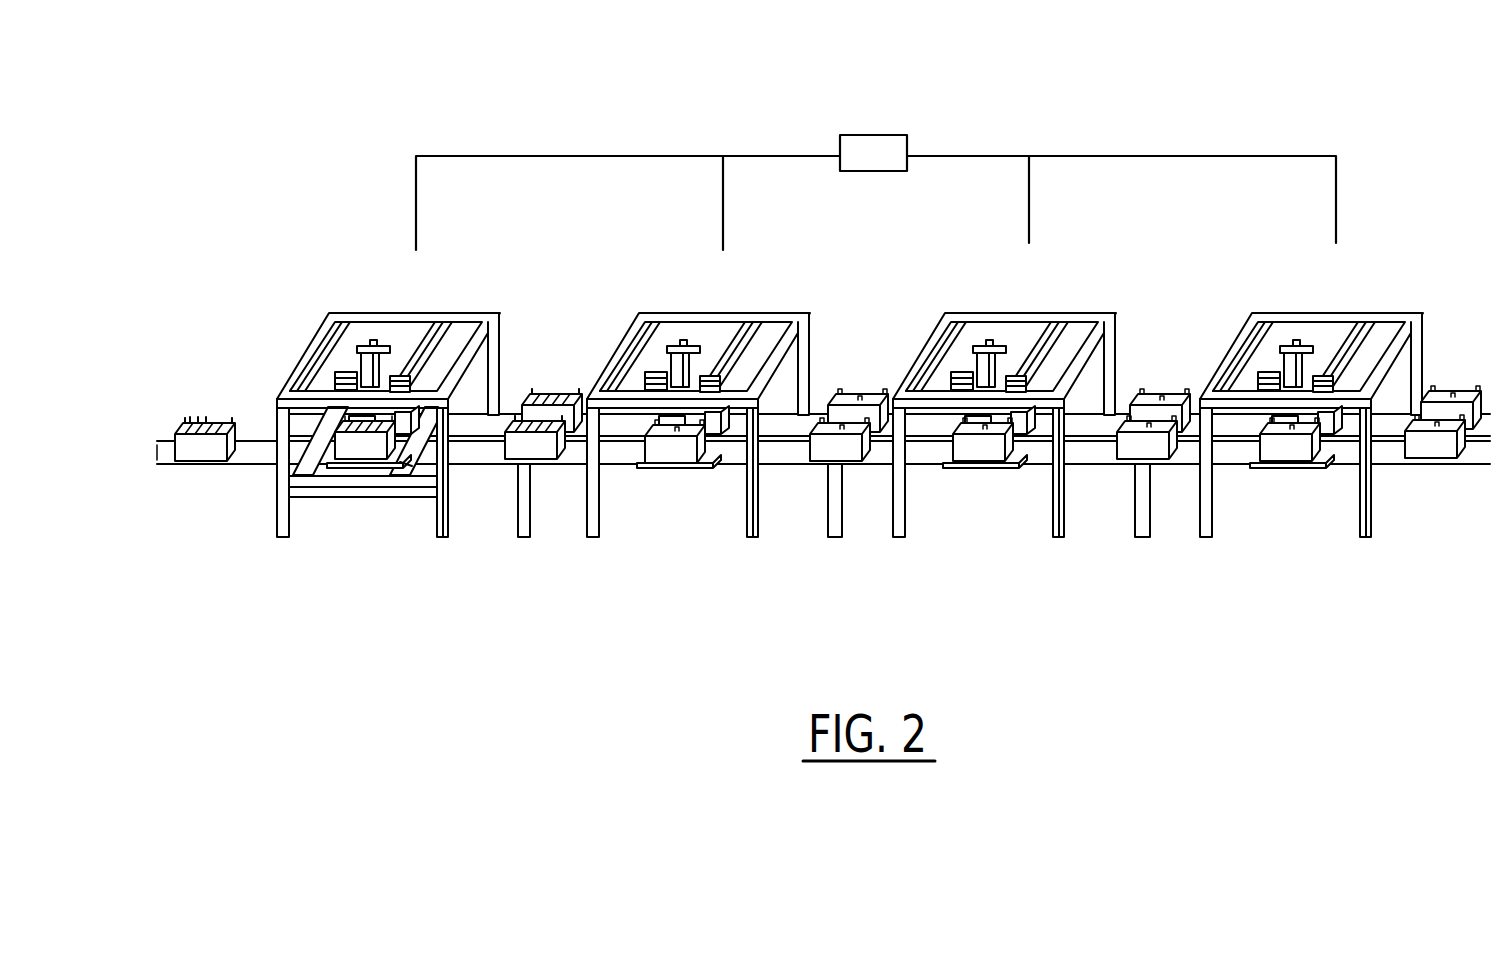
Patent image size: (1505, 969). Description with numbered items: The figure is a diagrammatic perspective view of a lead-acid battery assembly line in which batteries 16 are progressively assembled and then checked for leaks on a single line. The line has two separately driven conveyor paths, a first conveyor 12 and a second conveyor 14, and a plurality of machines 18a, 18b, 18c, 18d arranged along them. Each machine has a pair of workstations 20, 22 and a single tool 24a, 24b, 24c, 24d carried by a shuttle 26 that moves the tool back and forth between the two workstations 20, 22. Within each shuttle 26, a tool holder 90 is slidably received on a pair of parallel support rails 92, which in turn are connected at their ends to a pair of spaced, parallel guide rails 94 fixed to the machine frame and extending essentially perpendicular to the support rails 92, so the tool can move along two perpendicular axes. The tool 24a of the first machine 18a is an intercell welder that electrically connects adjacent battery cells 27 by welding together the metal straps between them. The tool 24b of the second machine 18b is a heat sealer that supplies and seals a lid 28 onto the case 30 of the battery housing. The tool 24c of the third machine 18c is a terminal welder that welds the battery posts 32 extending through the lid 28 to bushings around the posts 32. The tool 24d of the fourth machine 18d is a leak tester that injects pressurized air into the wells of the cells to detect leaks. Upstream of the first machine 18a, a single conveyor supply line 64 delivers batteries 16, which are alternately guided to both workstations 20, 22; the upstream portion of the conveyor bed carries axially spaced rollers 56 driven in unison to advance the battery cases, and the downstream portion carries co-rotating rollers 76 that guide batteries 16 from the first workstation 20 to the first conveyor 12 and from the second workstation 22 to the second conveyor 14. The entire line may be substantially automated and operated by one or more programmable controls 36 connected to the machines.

The first conveyor 12 is at (800, 418).
The second conveyor 14 is at (743, 462).
The battery 16 is at (210, 452).
The first machine 18a is at (470, 306).
The second machine 18b is at (761, 300).
The third machine 18c is at (1075, 300).
The fourth machine 18d is at (1312, 388).
The first workstation 20 is at (718, 455).
The second workstation 22 is at (370, 470).
The intercell weld tool 24a is at (373, 468).
The heat sealer tool 24b is at (680, 470).
The terminal welder tool 24c is at (985, 470).
The leak tester tool 24d is at (1305, 470).
The shuttle 26 is at (371, 346).
The battery cells 27 is at (211, 422).
The lid 28 is at (845, 420).
The case 30 is at (228, 452).
The battery posts 32 is at (188, 423).
The programmable control 36 is at (893, 135).
The rollers 56 is at (308, 464).
The conveyor supply line 64 is at (160, 463).
The rollers 76 is at (413, 467).
The tool holder 90 is at (375, 343).
The support rails 92 is at (360, 390).
The guide rails 94 is at (443, 330).